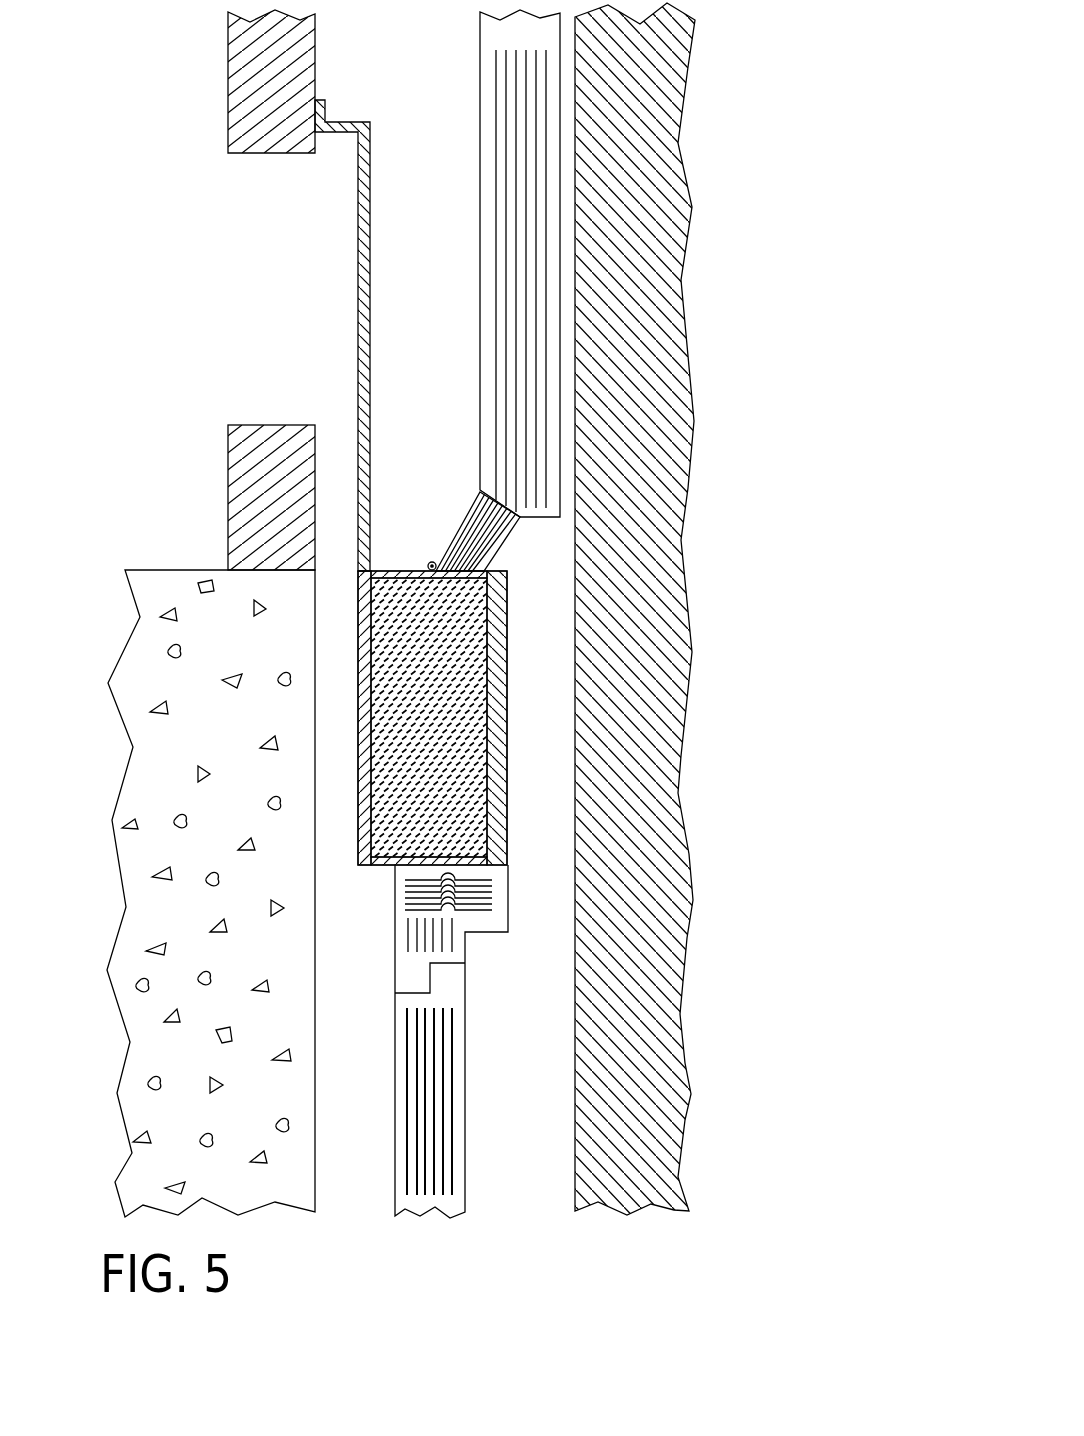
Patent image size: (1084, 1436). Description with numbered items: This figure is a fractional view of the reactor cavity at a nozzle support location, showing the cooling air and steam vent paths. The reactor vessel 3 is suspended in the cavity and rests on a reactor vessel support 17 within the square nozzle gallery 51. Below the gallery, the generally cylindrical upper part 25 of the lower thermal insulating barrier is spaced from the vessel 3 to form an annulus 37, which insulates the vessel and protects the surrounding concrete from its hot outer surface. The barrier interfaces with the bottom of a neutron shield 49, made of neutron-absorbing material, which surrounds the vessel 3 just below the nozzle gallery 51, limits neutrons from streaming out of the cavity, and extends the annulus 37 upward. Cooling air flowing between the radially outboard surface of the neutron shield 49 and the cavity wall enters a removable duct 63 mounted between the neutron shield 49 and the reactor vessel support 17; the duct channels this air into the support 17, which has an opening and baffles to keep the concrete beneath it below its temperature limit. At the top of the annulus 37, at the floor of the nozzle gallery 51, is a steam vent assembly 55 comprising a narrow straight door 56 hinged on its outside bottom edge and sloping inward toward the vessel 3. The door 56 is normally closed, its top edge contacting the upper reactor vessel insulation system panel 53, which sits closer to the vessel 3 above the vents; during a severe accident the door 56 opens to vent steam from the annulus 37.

The reactor vessel 3 is at (700, 313).
The reactor vessel support 17 is at (228, 97).
The upper part of thermal insulating barrier 25 is at (465, 1098).
The annulus 37 is at (562, 704).
The neutron shield 49 is at (465, 713).
The nozzle gallery 51 is at (188, 318).
The upper reactor vessel insulation system panel 53 is at (480, 92).
The steam vent assembly 55 is at (466, 472).
The hinged door 56 is at (457, 535).
The duct 63 is at (370, 243).